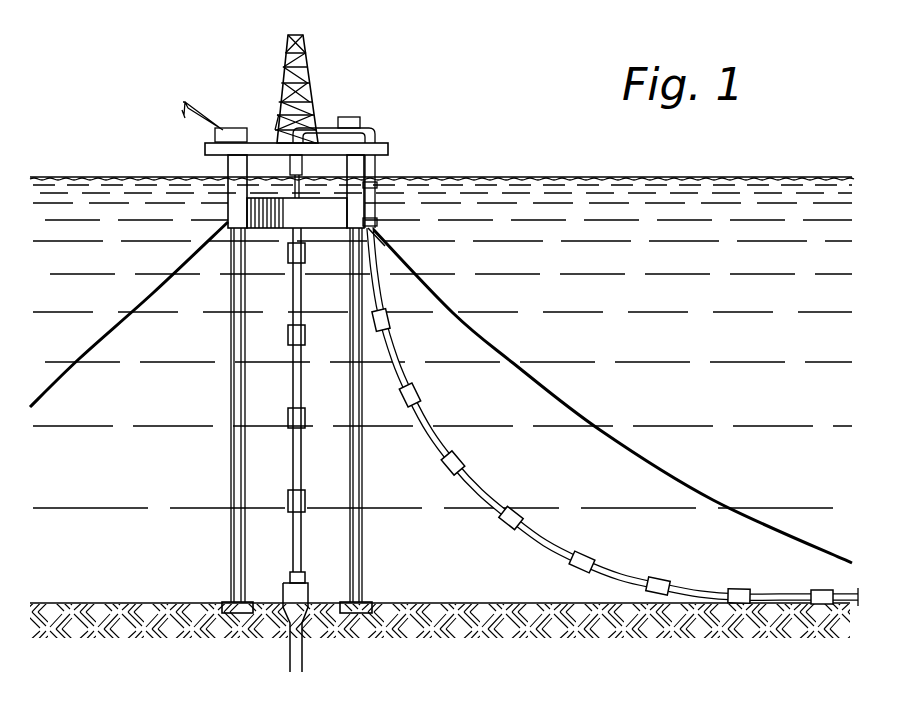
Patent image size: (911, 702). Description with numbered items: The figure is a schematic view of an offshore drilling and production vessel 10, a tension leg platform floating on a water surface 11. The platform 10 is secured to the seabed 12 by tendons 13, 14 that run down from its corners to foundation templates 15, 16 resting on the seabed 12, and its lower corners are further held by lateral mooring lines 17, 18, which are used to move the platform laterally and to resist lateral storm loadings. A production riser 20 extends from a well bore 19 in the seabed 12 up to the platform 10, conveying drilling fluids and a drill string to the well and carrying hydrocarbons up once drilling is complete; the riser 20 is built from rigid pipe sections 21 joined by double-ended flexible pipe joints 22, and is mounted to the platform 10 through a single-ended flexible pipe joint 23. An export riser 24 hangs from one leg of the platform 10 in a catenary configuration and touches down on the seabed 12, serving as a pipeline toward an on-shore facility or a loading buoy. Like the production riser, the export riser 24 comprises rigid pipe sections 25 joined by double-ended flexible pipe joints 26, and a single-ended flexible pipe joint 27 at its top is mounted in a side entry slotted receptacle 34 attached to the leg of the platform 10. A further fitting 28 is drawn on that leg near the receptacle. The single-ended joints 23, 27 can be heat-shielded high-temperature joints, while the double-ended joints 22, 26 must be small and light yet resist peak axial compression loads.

The offshore drilling and production vessel 10 is at (380, 86).
The water surface 11 is at (504, 176).
The seabed 12 is at (500, 603).
The tendon 13 is at (230, 447).
The tendon 14 is at (240, 484).
The foundation template 15 is at (225, 601).
The foundation template 16 is at (372, 601).
The lateral mooring line 17 is at (153, 293).
The lateral mooring line 18 is at (437, 295).
The well bore 19 is at (307, 620).
The production riser 20 is at (296, 400).
The rigid pipe section 21 is at (293, 377).
The double-ended flexible pipe joint 22 is at (288, 417).
The single-ended flexible pipe joint 23 is at (297, 158).
The export riser 24 is at (610, 380).
The rigid pipe section 25 is at (396, 352).
The double-ended flexible pipe joint 26 is at (421, 397).
The single-ended flexible pipe joint 27 is at (378, 223).
The riser clamp at platform 28 is at (377, 186).
The side entry slotted receptacle 34 is at (390, 250).